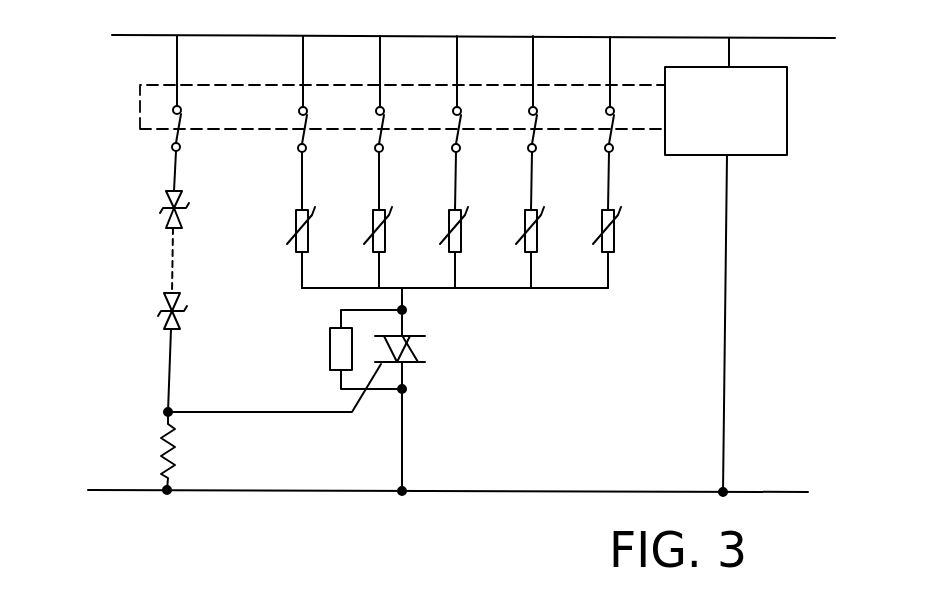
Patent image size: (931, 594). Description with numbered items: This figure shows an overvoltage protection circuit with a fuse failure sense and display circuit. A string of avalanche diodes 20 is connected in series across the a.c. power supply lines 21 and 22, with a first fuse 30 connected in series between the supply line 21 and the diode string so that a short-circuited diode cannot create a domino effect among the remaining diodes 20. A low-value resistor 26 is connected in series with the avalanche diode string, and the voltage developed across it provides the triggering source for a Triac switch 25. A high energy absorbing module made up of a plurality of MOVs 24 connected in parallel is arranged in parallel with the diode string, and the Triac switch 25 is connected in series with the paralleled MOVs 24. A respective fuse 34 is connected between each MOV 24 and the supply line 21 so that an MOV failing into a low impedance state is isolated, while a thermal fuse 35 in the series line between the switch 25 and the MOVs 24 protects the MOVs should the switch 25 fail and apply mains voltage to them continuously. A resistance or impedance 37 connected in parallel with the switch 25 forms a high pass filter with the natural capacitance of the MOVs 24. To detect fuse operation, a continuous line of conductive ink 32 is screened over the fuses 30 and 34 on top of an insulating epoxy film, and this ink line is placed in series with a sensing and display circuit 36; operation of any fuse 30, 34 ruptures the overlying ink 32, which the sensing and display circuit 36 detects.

The a.c. power supply line 21 is at (136, 38).
The a.c. power supply line 22 is at (127, 491).
The first fuse 30 is at (170, 137).
The conductive ink 32 is at (248, 113).
The avalanche diodes 20 is at (163, 212).
The resistor 26 is at (163, 449).
The fuse 34 is at (318, 117).
The MOVs 24 is at (372, 222).
The thermal fuse 35 is at (423, 289).
The resistance or impedance 37 is at (328, 352).
The Triac switch 25 is at (422, 350).
The sensing and display circuit 36 is at (744, 125).